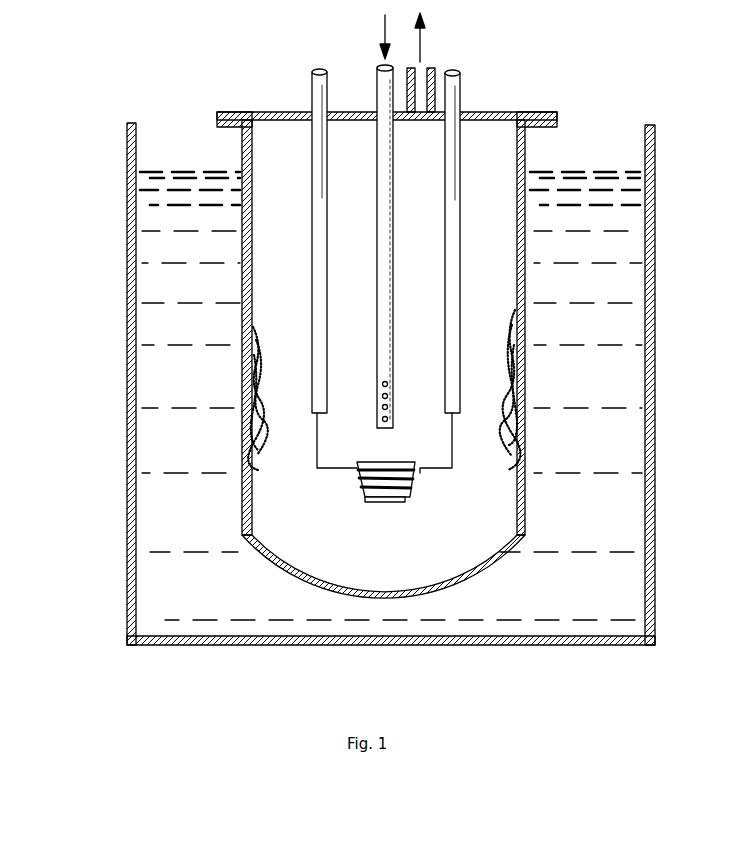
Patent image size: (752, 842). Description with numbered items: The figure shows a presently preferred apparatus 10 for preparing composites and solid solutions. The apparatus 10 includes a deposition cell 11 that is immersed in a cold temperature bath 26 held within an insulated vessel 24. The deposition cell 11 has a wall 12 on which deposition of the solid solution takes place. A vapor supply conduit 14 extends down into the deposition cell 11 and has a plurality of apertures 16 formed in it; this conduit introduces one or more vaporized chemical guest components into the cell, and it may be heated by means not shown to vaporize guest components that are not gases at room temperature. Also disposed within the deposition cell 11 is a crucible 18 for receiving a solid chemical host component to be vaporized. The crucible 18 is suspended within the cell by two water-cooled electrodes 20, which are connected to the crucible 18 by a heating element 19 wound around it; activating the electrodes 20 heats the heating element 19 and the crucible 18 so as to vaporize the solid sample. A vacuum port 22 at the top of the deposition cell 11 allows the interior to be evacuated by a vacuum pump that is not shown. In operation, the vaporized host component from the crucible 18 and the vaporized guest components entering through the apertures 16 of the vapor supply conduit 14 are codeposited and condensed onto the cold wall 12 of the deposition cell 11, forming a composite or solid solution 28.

The apparatus 10 is at (82, 497).
The deposition cell 11 is at (545, 152).
The wall 12 is at (252, 505).
The vapor supply conduit 14 is at (393, 182).
The apertures 16 is at (388, 420).
The crucible 18 is at (382, 500).
The heating element 19 is at (357, 487).
The water-cooled electrodes 20 is at (312, 175).
The vacuum port 22 is at (422, 78).
The insulated vessel 24 is at (655, 543).
The cold temperature bath 26 is at (597, 445).
The composite or solid solution 28 is at (256, 392).